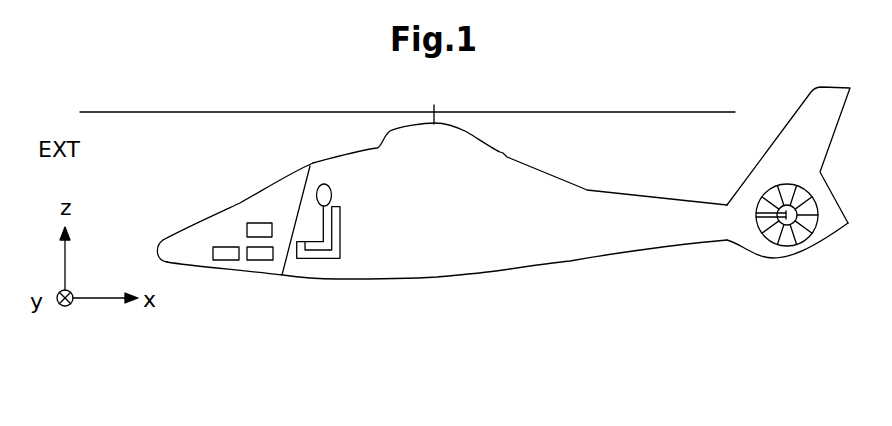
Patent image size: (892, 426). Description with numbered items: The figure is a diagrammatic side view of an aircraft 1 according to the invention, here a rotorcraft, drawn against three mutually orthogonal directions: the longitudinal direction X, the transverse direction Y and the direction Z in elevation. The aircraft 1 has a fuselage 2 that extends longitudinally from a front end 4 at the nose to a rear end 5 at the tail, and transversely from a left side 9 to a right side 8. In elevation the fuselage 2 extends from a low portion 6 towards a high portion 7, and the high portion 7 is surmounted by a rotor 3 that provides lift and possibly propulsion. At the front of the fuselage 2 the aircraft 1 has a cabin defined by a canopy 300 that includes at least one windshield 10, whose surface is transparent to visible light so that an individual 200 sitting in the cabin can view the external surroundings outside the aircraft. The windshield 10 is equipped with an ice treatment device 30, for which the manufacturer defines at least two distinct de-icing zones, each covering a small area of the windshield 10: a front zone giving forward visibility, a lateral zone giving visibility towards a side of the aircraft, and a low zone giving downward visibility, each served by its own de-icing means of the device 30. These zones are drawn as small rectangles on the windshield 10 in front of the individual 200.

The aircraft 1 is at (693, 55).
The fuselage 2 is at (640, 193).
The rotor 3 is at (537, 90).
The front end 4 is at (157, 258).
The rear end 5 is at (787, 275).
The low portion 6 is at (378, 287).
The high portion 7 is at (552, 170).
The right side 8 is at (277, 290).
The left side 9 is at (498, 250).
The windshield 10 is at (292, 190).
The ice treatment device 30 is at (238, 203).
The individual 200 is at (340, 225).
The canopy 300 is at (282, 170).